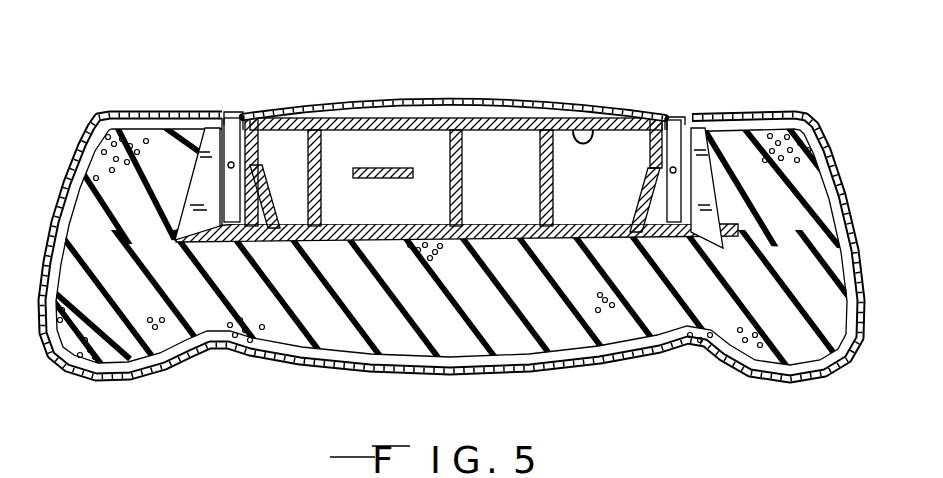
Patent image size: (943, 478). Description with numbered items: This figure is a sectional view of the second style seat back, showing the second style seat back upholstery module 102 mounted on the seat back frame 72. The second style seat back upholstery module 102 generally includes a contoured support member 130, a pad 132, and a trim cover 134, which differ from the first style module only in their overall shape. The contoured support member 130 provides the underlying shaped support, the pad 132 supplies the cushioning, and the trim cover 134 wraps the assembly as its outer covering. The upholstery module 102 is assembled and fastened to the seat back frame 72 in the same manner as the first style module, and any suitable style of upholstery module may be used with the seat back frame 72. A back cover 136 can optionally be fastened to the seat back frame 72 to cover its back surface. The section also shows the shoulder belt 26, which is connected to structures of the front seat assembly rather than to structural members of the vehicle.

The second style seat back upholstery module 102 is at (728, 92).
The back cover 136 is at (455, 101).
The seat back frame 72 is at (588, 123).
The shoulder belt 26 is at (389, 180).
The contoured support member 130 is at (377, 238).
The trim cover 134 is at (539, 376).
The pad 132 is at (803, 344).